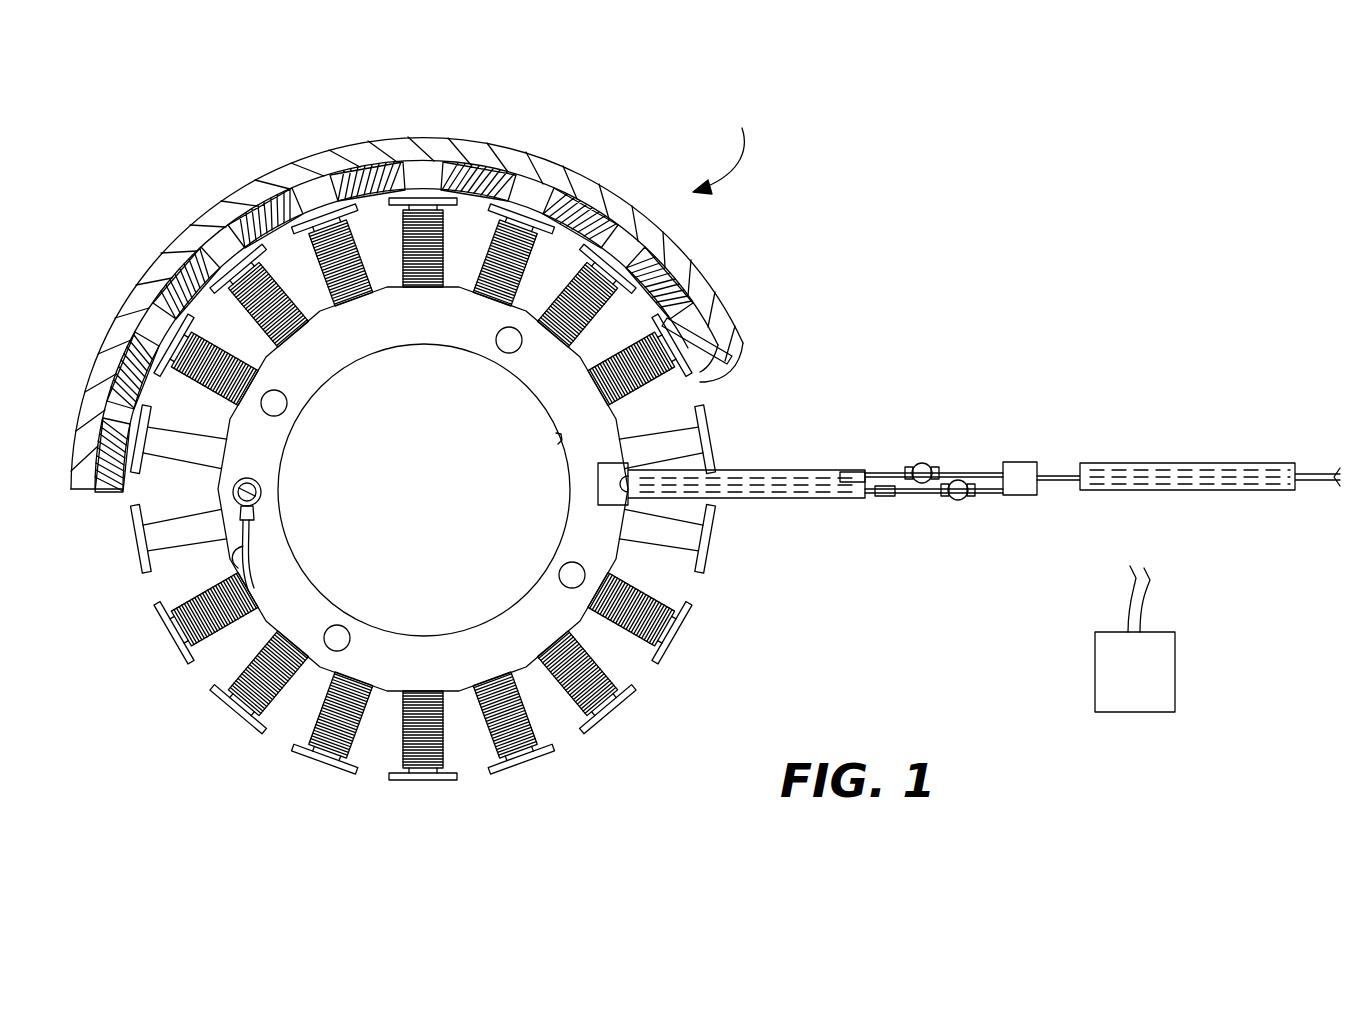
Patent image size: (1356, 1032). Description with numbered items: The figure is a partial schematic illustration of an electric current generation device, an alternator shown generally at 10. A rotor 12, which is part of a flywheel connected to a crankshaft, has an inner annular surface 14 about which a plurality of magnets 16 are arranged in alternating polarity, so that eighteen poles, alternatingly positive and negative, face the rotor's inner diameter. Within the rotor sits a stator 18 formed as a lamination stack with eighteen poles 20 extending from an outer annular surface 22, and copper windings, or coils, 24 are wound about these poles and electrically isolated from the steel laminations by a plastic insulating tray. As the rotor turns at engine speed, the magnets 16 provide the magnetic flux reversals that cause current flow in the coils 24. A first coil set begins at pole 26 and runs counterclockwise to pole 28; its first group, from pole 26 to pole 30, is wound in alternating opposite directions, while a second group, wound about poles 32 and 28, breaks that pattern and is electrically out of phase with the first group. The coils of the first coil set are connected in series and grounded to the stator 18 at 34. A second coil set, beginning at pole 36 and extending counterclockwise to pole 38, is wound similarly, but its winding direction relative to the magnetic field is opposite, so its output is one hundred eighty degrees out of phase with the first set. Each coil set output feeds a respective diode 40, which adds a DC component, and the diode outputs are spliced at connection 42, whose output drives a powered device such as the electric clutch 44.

The alternator 10 is at (720, 147).
The rotor 12 is at (345, 140).
The inner annular surface 14 is at (703, 380).
The magnets 16 is at (465, 170).
The stator 18 is at (508, 368).
The poles 20 is at (700, 422).
The outer annular surface 22 is at (232, 560).
The windings 24 is at (548, 738).
The pole 26 is at (707, 307).
The pole 28 is at (150, 340).
The pole 30 is at (320, 225).
The pole 32 is at (212, 257).
The ground 34 is at (262, 492).
The pole 36 is at (158, 640).
The pole 38 is at (696, 640).
The diodes 40 is at (920, 462).
The connection 42 is at (1020, 462).
The electric clutch 44 is at (1095, 682).